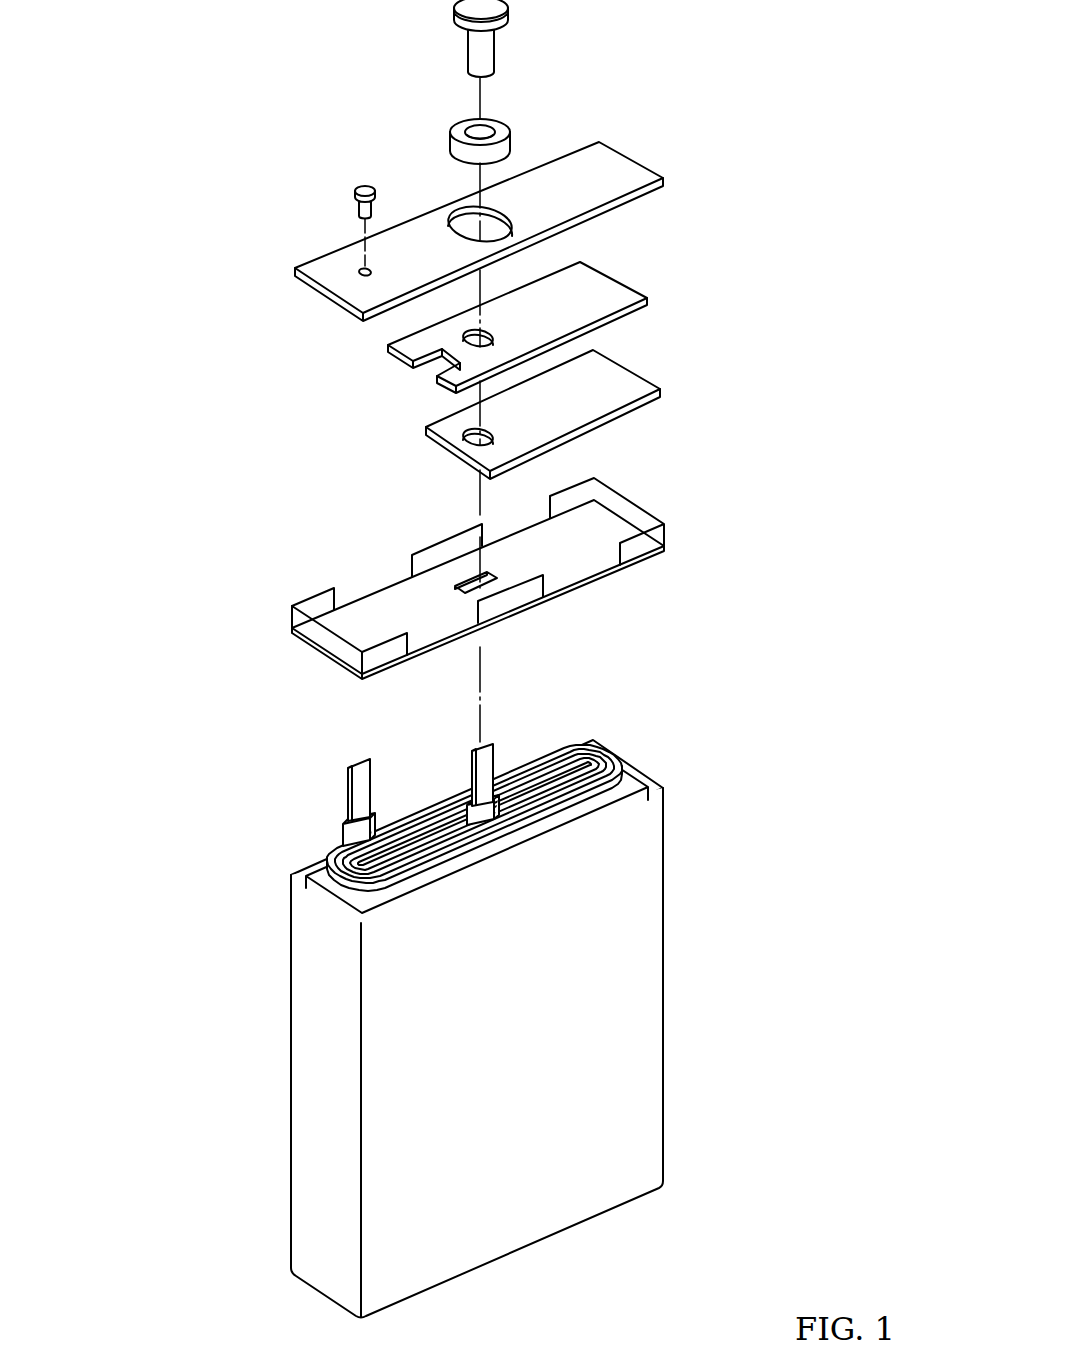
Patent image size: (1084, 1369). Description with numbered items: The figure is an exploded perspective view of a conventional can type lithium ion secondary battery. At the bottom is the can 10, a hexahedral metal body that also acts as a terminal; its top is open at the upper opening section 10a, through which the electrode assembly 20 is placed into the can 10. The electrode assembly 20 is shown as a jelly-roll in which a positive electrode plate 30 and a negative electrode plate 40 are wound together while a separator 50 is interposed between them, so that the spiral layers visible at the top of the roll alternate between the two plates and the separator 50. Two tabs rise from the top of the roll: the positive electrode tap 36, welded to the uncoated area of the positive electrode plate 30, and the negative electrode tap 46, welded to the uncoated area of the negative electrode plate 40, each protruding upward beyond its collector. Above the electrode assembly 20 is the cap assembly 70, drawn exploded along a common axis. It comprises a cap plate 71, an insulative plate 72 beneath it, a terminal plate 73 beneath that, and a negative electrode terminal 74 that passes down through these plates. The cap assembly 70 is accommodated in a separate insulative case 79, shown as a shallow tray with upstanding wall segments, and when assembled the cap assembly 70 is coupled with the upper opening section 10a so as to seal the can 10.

The can 10 is at (538, 1029).
The upper opening section 10a is at (640, 780).
The electrode assembly 20 is at (513, 765).
The positive electrode plate 30 is at (526, 748).
The negative electrode plate 40 is at (622, 768).
The separator 50 is at (612, 757).
The positive electrode tap 36 is at (363, 794).
The negative electrode tap 46 is at (482, 770).
The cap assembly 70 is at (213, 197).
The cap plate 71 is at (337, 283).
The insulative plate 72 is at (410, 338).
The terminal plate 73 is at (450, 435).
The negative electrode terminal 74 is at (462, 14).
The insulative case 79 is at (390, 587).